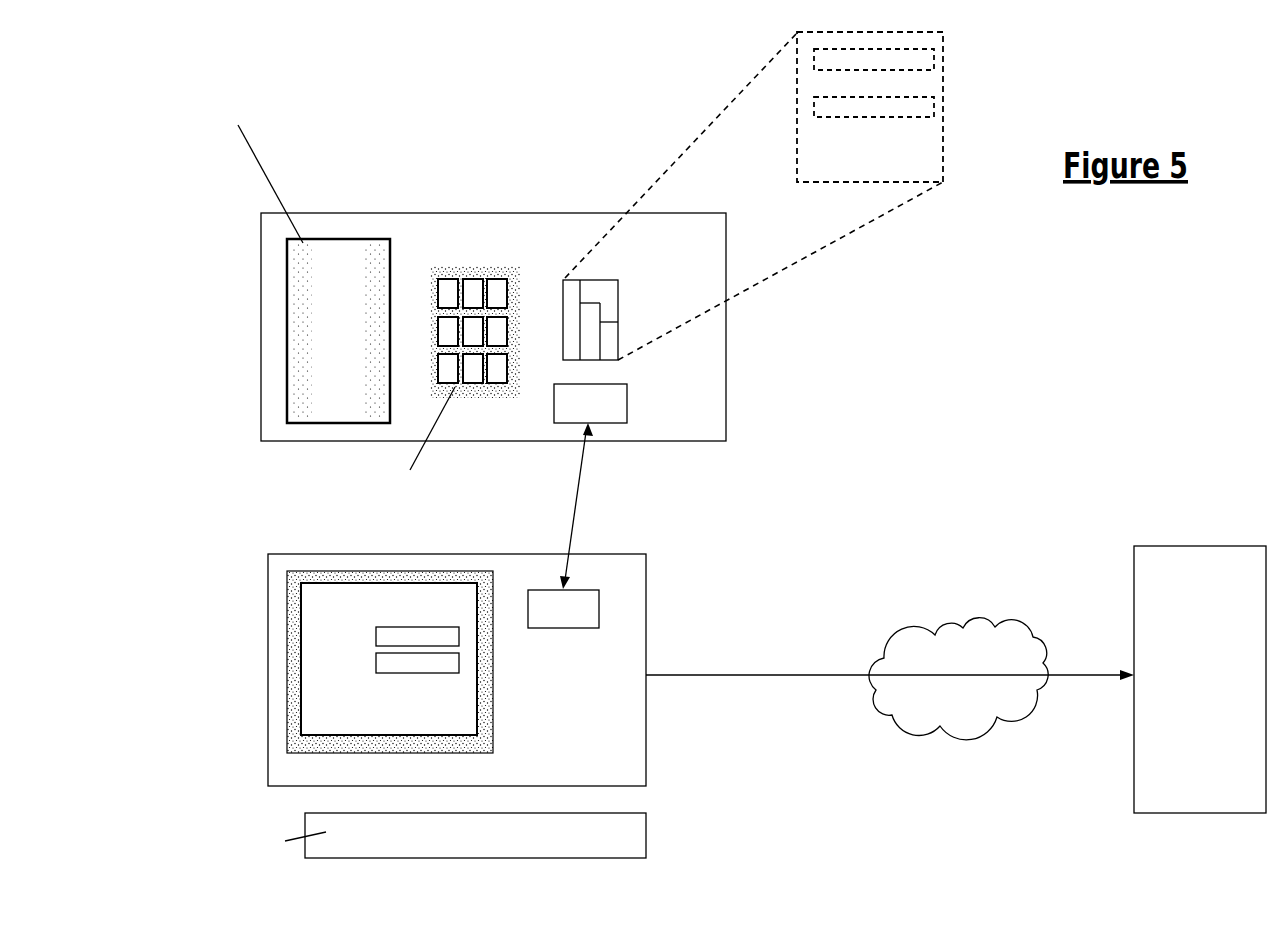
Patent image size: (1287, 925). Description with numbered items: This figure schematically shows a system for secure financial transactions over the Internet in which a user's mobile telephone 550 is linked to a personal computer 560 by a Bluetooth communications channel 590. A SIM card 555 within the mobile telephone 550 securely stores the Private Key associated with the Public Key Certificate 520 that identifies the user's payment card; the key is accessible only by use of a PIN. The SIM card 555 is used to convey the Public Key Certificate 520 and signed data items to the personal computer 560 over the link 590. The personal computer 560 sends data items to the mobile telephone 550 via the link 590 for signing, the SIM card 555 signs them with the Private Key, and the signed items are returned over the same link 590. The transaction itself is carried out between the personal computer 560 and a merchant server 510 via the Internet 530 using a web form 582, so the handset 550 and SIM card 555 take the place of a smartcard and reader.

The merchant server 510 is at (1134, 728).
The Public Key Certificate 520 is at (754, 196).
The Internet 530 is at (908, 702).
The mobile telephone 550 is at (643, 220).
The SIM card 555 is at (563, 273).
The personal computer 560 is at (268, 720).
The web form 582 is at (327, 589).
The Bluetooth communications channel 590 is at (590, 488).